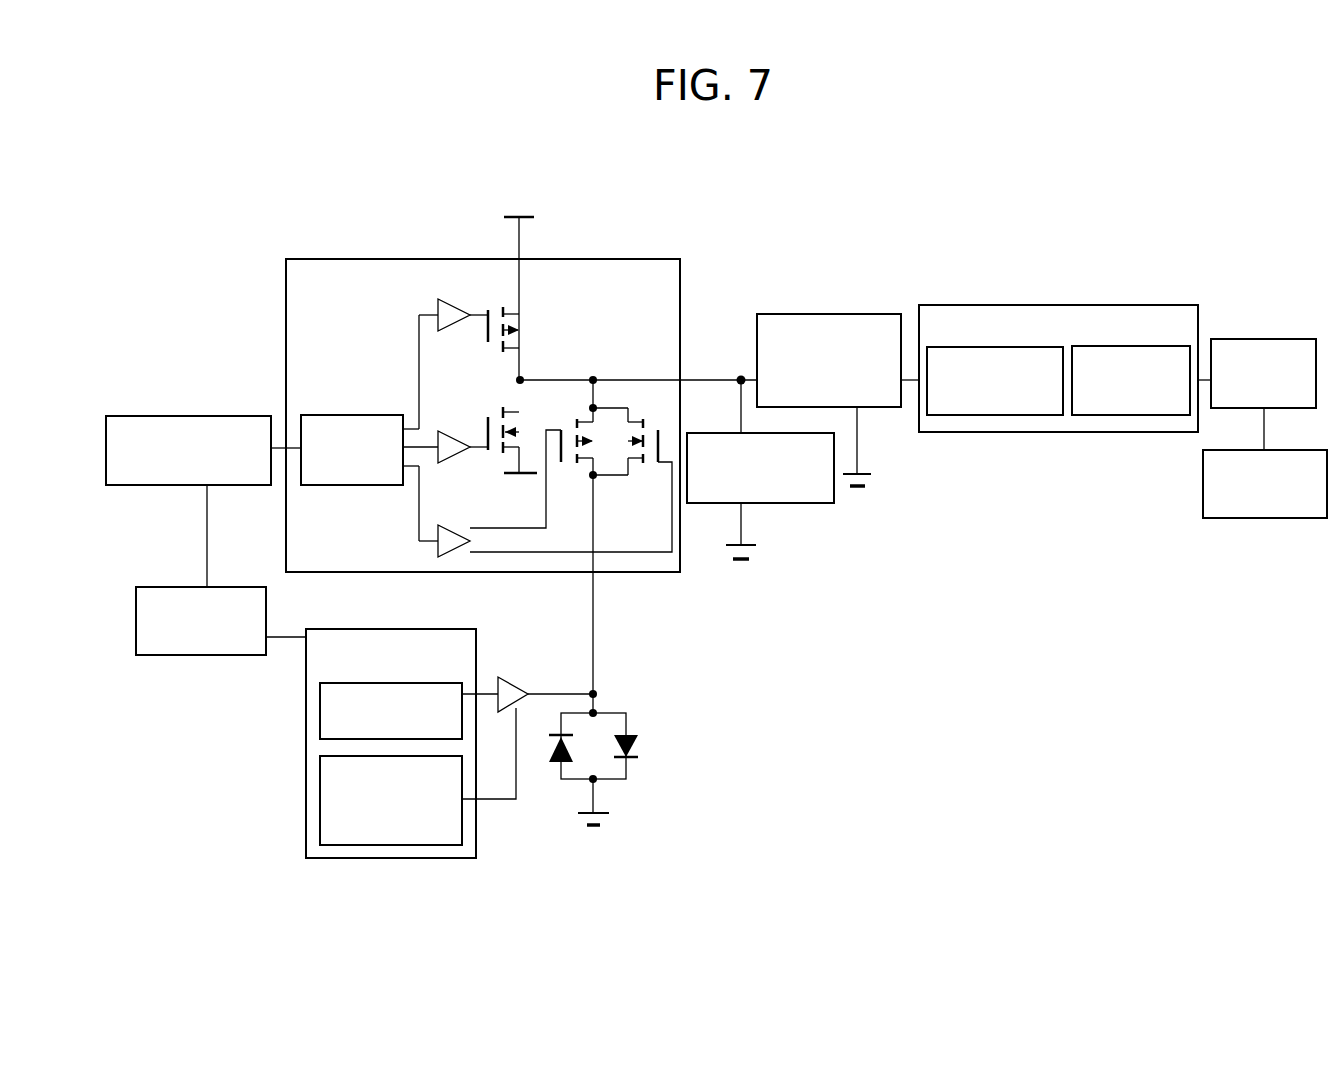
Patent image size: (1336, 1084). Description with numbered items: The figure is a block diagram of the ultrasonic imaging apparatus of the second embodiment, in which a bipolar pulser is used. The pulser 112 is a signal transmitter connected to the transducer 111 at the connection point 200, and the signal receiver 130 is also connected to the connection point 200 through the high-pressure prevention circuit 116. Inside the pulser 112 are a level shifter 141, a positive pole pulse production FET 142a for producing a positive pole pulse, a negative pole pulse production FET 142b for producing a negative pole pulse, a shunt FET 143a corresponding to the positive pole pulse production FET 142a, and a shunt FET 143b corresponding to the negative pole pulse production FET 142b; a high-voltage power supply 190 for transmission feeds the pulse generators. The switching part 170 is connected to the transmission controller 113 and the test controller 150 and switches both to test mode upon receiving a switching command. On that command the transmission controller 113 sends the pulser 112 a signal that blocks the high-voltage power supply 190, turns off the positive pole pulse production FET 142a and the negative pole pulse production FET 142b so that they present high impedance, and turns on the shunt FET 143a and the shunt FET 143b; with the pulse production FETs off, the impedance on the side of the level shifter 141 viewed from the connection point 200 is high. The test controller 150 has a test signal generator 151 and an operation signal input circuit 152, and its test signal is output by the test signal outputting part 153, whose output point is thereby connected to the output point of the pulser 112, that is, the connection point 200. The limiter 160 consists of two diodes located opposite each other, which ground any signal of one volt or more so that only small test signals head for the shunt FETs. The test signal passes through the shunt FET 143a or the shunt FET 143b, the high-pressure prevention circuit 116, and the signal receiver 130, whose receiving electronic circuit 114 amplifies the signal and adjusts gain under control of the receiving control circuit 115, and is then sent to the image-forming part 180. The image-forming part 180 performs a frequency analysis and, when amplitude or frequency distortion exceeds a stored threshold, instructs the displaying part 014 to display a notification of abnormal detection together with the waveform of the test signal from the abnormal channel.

The pulser 112 is at (330, 259).
The high-voltage power supply 190 is at (529, 216).
The positive pole pulse production FET 142a is at (518, 330).
The negative pole pulse production FET 142b is at (514, 431).
The shunt FET 143a is at (645, 465).
The shunt FET 143b is at (586, 460).
The level shifter 141 is at (350, 415).
The transmission controller 113 is at (187, 416).
The switching part 170 is at (241, 587).
The test controller 150 is at (358, 629).
The test signal generator 151 is at (320, 714).
The operation signal input circuit 152 is at (320, 800).
The test signal outputting part 153 is at (510, 679).
The limiter 160 is at (638, 738).
The connection point 200 is at (738, 379).
The high-pressure prevention circuit 116 is at (829, 314).
The transducer 111 is at (790, 504).
The signal receiver 130 is at (1056, 305).
The receiving electronic circuit 114 is at (993, 416).
The receiving control circuit 115 is at (1125, 416).
The image-forming part 180 is at (1262, 340).
The displaying part 014 is at (1261, 519).